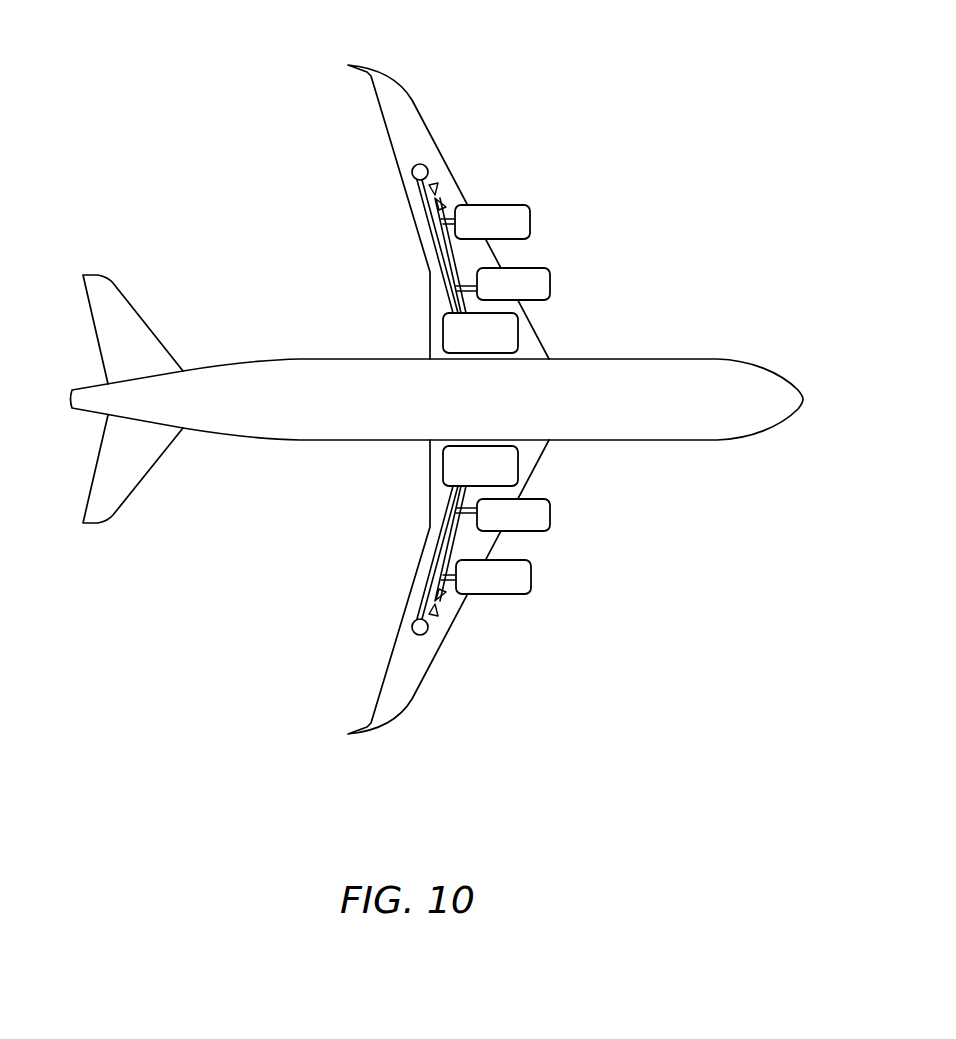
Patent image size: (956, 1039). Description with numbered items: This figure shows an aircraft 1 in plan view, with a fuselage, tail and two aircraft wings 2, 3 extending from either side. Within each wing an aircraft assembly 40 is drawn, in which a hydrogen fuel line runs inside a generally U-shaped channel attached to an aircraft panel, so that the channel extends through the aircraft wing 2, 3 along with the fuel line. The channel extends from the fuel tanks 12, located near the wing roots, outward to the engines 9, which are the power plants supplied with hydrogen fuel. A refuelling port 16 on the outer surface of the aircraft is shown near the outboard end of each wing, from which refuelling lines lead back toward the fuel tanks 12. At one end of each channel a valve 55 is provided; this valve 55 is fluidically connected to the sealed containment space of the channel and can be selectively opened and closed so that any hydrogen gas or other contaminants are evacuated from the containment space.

The aircraft 1 is at (243, 170).
The aircraft wing 2 is at (407, 118).
The aircraft wing 3 is at (407, 675).
The engine 9 is at (530, 219).
The fuel tank 12 is at (443, 337).
The refuelling port 16 is at (412, 177).
The aircraft assembly 40 is at (462, 259).
The valve 55 is at (441, 194).